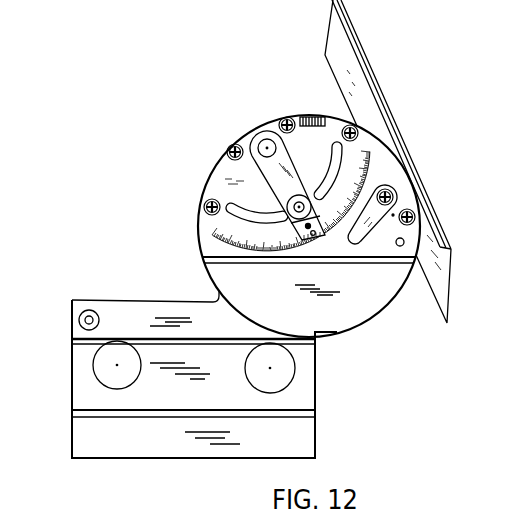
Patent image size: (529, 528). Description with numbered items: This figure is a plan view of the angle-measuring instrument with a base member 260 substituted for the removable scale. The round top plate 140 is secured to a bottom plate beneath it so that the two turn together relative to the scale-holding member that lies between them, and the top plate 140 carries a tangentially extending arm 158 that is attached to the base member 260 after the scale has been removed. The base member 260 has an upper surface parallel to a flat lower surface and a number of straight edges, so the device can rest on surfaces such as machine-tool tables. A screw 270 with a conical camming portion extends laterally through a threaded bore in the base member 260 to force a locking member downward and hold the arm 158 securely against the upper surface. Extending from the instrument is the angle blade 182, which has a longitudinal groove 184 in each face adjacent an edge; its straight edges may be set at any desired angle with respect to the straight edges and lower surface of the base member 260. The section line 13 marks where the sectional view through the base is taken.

The section line 13- 13 is at (117, 263).
The top plate 140 is at (340, 314).
The tangentially extending arm 158 is at (152, 315).
The angle blade 182 is at (367, 103).
The groove 184 is at (345, 38).
The base member 260 is at (97, 450).
The screw 270 is at (100, 365).